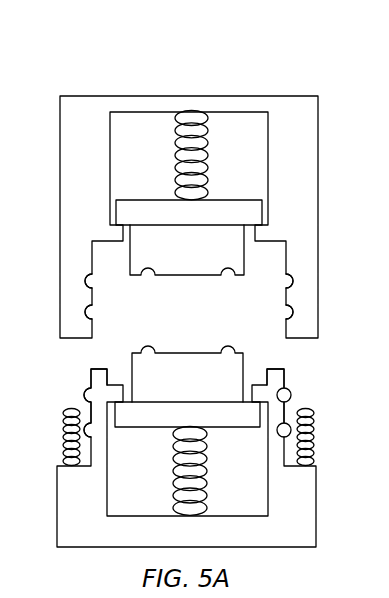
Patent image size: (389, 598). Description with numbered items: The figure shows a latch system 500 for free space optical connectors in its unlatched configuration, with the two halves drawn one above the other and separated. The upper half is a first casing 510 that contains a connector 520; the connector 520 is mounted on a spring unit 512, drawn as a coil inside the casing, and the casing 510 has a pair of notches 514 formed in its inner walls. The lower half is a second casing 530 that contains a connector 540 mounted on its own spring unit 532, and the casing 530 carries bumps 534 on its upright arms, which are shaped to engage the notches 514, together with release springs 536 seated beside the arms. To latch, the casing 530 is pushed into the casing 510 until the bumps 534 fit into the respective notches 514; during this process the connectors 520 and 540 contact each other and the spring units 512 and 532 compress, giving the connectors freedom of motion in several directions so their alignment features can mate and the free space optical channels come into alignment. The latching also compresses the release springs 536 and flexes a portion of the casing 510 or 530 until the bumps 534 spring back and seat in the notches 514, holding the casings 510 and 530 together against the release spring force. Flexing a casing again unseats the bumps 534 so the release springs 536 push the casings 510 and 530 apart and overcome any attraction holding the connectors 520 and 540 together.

The latch system 500 is at (64, 64).
The first casing 510 is at (68, 216).
The spring unit 512 is at (209, 193).
The notches 514 is at (91, 282).
The connector 520 is at (173, 266).
The second casing 530 is at (67, 507).
The spring unit 532 is at (207, 504).
The bumps 534 is at (84, 393).
The release springs 536 is at (63, 456).
The connector 540 is at (173, 383).